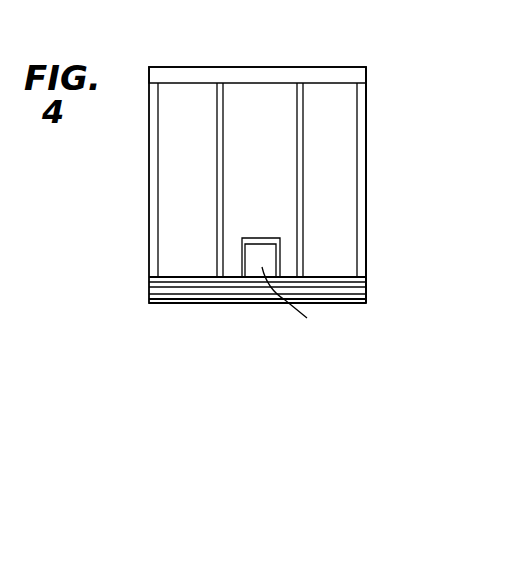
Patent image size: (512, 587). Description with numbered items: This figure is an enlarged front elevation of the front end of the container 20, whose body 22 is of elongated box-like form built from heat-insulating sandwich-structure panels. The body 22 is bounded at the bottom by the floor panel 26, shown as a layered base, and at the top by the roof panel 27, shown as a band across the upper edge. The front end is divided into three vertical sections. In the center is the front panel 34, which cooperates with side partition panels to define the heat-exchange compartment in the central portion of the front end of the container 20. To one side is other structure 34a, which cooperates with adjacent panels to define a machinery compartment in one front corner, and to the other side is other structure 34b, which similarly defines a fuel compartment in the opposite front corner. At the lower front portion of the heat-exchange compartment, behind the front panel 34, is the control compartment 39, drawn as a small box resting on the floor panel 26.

The container 20 is at (111, 192).
The body 22 is at (367, 151).
The floor panel 26 is at (192, 305).
The roof panel 27 is at (303, 66).
The front panel 34 is at (262, 170).
The other structure 34a is at (335, 170).
The other structure 34b is at (186, 185).
The control compartment 39 is at (257, 247).